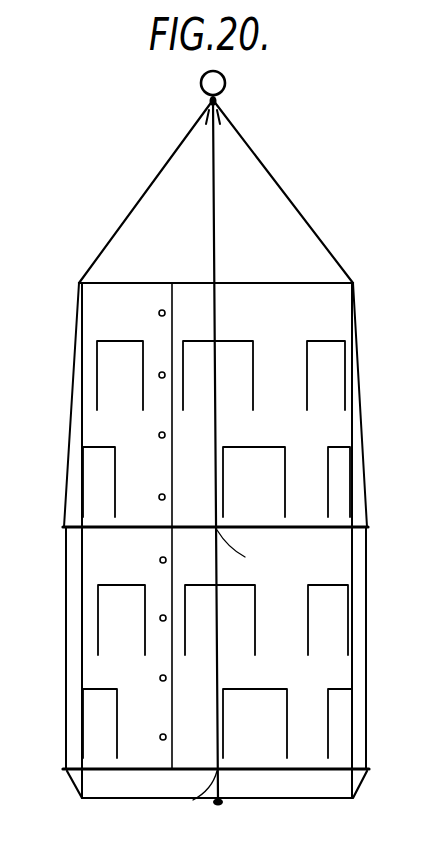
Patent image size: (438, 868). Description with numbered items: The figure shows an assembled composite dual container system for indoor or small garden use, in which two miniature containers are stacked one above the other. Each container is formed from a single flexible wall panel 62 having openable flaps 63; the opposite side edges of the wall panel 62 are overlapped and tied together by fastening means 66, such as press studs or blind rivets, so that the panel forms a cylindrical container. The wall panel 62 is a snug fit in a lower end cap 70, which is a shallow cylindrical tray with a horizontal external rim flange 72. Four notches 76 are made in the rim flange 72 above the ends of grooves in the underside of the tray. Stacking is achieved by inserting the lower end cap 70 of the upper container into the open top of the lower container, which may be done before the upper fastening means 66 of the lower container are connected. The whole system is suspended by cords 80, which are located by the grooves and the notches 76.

The cords 80 is at (297, 207).
The wall panel 62 is at (332, 313).
The openable flaps 63 is at (328, 383).
The rim flange 72 is at (360, 518).
The fastening means 66 is at (160, 439).
The notches 76 is at (173, 820).
The lower end cap 70 is at (328, 785).